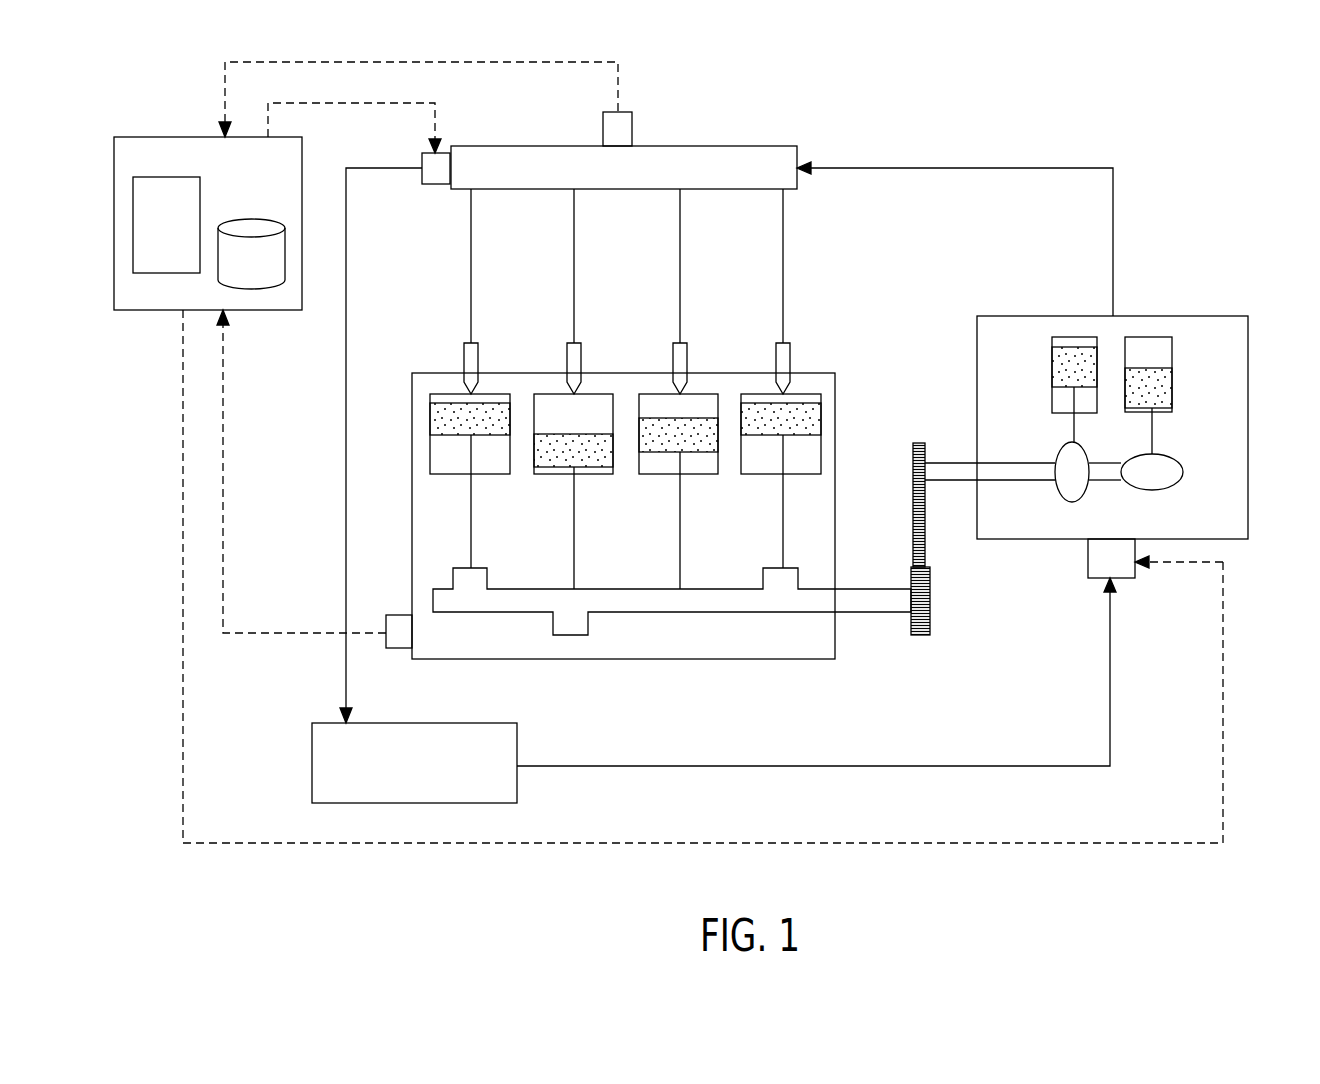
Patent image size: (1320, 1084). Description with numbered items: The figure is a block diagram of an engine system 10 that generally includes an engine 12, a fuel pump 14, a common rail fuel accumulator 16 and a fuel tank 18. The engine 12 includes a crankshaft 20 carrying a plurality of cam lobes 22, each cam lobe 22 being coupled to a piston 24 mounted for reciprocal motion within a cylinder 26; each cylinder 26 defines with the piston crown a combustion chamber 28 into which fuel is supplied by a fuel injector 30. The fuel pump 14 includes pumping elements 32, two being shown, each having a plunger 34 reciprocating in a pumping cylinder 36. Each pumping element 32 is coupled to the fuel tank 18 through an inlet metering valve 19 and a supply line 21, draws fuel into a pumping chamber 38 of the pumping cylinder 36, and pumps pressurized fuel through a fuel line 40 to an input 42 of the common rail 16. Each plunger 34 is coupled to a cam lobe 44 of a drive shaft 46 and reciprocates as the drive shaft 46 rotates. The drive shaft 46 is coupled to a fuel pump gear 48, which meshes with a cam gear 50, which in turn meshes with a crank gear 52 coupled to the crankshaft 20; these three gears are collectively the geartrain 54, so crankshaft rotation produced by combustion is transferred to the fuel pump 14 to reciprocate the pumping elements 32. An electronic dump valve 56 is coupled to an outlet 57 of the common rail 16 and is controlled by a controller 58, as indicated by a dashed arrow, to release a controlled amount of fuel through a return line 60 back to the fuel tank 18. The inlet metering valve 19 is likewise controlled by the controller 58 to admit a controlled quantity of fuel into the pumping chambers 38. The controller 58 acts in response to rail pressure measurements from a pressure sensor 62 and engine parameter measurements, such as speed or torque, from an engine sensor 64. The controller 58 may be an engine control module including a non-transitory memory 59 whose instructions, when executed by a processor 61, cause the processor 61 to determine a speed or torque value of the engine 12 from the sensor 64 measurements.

The engine system 10 is at (1153, 139).
The engine 12 is at (842, 352).
The fuel pump 14 is at (1236, 300).
The common rail fuel accumulator 16 is at (647, 227).
The fuel tank 18 is at (532, 750).
The inlet metering valve 19 is at (1102, 578).
The crankshaft 20 is at (716, 612).
The supply line 21 is at (970, 765).
The cam lobe 22 is at (575, 636).
The piston 24 is at (437, 418).
The cylinder 26 is at (440, 458).
The combustion chamber 28 is at (598, 405).
The fuel injector 30 is at (465, 356).
The pumping element 32 is at (1036, 351).
The plunger 34 is at (1055, 368).
The pumping cylinder 36 is at (1055, 400).
The pumping chamber 38 is at (1152, 352).
The fuel line 40 is at (1045, 168).
The input 42 is at (797, 153).
The cam lobe 44 is at (1072, 494).
The drive shaft 46 is at (1037, 482).
The fuel pump gear 48 is at (913, 462).
The cam gear 50 is at (913, 535).
The crank gear 52 is at (932, 618).
The geartrain 54 is at (915, 586).
The electronic dump valve 56 is at (434, 172).
The outlet 57 is at (487, 147).
The controller 58 is at (152, 128).
The non-transitory memory 59 is at (265, 277).
The return line 60 is at (345, 540).
The processor 61 is at (180, 238).
The pressure sensor 62 is at (622, 125).
The engine sensor 64 is at (400, 638).